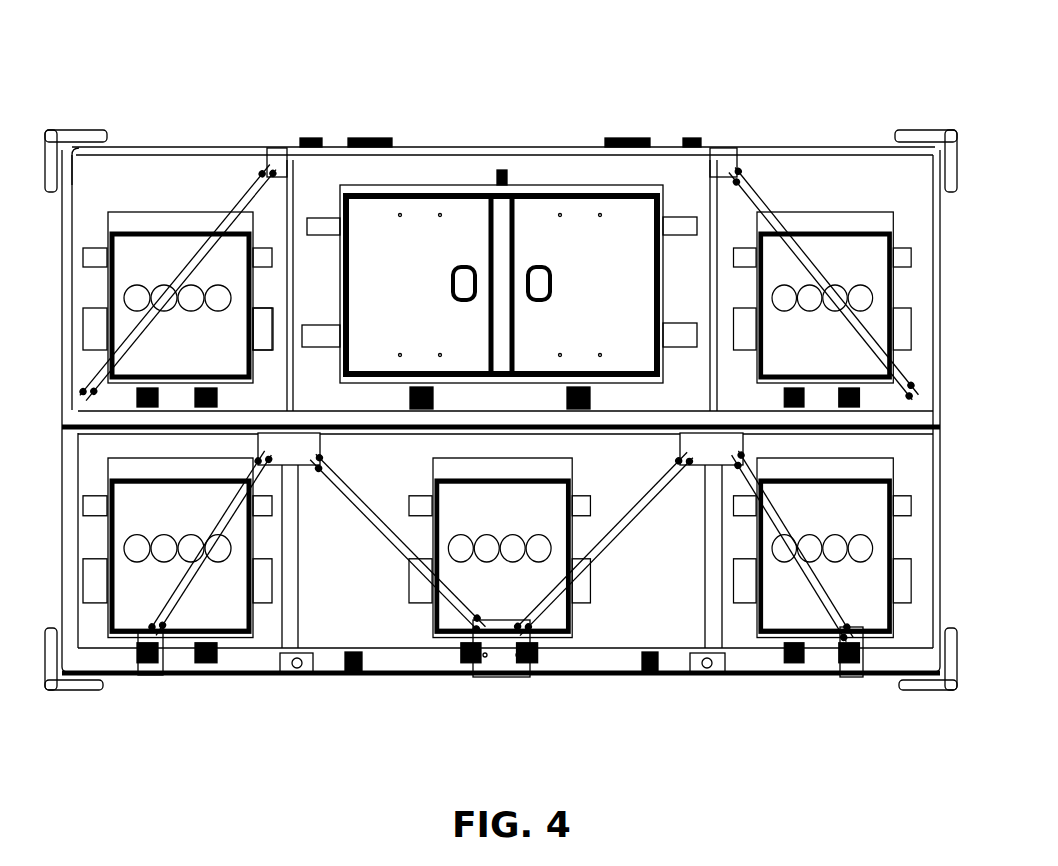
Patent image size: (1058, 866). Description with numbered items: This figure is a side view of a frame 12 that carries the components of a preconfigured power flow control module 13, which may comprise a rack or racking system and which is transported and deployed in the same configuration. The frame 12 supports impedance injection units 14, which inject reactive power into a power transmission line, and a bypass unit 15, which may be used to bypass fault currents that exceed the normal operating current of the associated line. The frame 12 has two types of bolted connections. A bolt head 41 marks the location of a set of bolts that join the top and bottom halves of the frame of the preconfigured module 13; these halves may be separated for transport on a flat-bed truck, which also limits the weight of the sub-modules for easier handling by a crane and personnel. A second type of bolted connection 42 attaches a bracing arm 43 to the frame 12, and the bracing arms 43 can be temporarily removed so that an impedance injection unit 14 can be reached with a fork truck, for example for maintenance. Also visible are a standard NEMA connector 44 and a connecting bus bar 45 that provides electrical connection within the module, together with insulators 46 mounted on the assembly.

The frame 12 is at (590, 668).
The preconfigured power flow control module 13 is at (767, 78).
The impedance injection unit 14 is at (855, 252).
The bypass unit 15 is at (413, 218).
The bolt head 41 is at (307, 410).
The second type of bolted connection 42 is at (500, 640).
The bracing arm 43 is at (390, 543).
The NEMA connector 44 is at (323, 220).
The connecting bus bar 45 is at (276, 303).
The insulator 46 is at (592, 402).